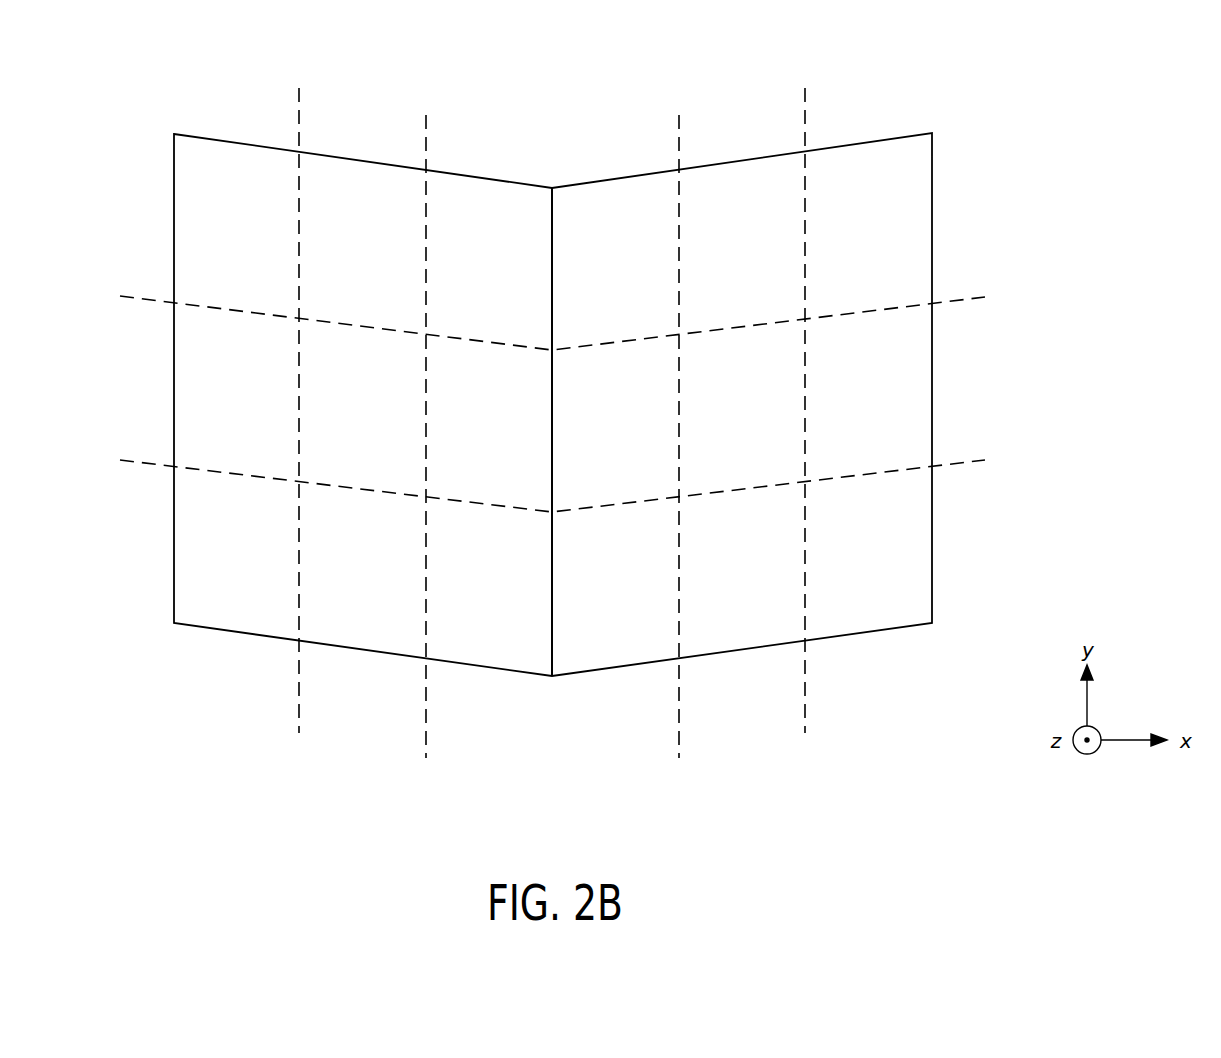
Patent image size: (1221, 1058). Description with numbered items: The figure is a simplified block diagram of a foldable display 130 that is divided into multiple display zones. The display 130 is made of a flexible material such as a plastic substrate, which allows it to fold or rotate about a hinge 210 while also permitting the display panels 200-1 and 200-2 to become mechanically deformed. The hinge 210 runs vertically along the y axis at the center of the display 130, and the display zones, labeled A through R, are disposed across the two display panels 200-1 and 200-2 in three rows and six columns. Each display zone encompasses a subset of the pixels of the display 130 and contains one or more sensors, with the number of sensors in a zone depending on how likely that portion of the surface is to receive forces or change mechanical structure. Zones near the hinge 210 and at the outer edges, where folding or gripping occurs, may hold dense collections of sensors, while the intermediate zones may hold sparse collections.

The display 130 is at (196, 57).
The display panel 200-1 is at (389, 142).
The display panel 200-2 is at (769, 142).
The hinge 210 is at (552, 178).